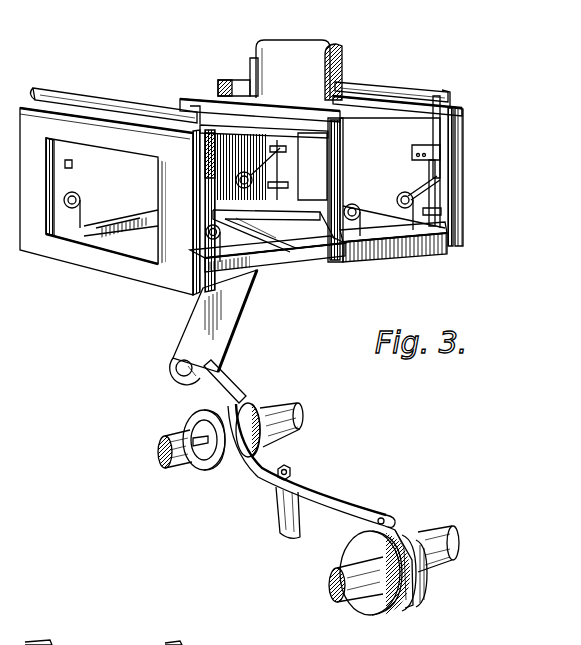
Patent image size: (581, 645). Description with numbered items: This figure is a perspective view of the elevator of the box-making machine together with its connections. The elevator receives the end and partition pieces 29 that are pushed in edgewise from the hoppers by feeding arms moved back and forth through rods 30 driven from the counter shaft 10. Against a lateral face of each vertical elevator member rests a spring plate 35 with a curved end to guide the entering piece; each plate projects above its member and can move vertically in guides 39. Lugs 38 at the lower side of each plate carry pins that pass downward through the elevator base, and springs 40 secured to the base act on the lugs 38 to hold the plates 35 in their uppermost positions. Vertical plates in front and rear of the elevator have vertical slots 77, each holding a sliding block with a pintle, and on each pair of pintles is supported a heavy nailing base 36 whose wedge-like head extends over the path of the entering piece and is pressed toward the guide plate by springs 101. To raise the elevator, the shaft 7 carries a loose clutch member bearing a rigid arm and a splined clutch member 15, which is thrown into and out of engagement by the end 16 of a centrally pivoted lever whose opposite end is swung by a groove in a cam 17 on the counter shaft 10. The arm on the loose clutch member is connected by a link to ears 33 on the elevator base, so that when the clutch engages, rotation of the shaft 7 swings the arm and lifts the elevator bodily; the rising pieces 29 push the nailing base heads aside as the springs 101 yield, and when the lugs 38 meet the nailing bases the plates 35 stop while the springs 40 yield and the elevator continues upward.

The shaft 7 is at (305, 417).
The counter shaft 10 is at (346, 602).
The clutch member 15 is at (188, 418).
The lever end 16 is at (226, 470).
The cam 17 is at (345, 552).
The end piece 29 is at (65, 632).
The rods 30 is at (131, 634).
The ears 33 is at (468, 251).
The spring plate 35 is at (118, 108).
The nailing base 36 is at (278, 62).
The lugs 38 is at (282, 166).
The guides 39 is at (442, 150).
The springs 40 is at (81, 196).
The vertical slots 77 is at (246, 148).
The springs 101 is at (256, 62).